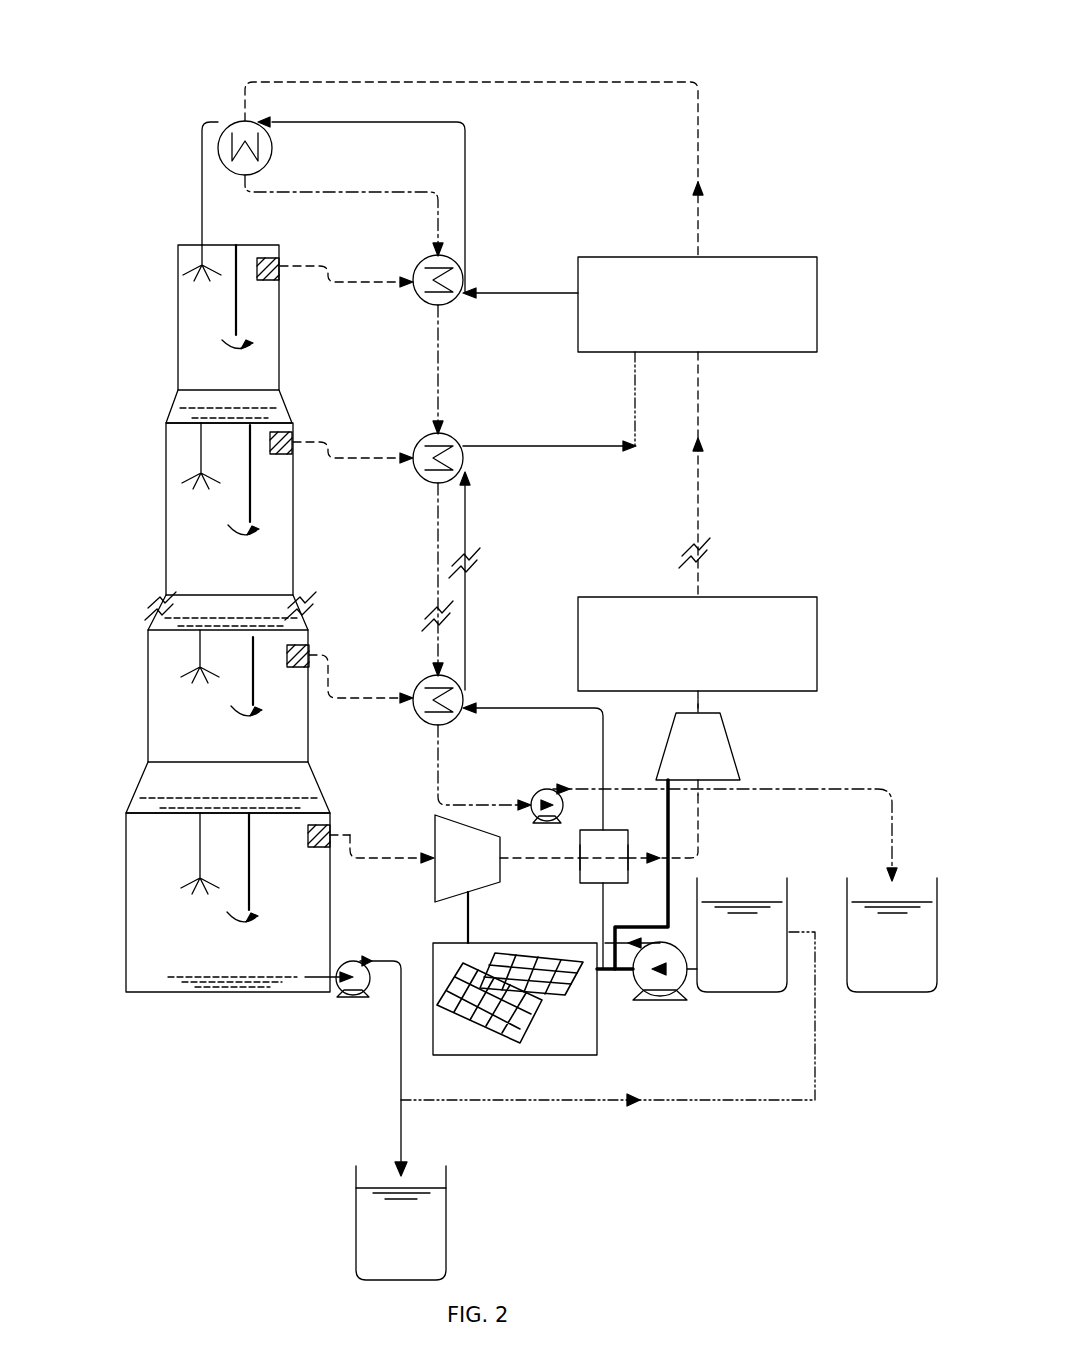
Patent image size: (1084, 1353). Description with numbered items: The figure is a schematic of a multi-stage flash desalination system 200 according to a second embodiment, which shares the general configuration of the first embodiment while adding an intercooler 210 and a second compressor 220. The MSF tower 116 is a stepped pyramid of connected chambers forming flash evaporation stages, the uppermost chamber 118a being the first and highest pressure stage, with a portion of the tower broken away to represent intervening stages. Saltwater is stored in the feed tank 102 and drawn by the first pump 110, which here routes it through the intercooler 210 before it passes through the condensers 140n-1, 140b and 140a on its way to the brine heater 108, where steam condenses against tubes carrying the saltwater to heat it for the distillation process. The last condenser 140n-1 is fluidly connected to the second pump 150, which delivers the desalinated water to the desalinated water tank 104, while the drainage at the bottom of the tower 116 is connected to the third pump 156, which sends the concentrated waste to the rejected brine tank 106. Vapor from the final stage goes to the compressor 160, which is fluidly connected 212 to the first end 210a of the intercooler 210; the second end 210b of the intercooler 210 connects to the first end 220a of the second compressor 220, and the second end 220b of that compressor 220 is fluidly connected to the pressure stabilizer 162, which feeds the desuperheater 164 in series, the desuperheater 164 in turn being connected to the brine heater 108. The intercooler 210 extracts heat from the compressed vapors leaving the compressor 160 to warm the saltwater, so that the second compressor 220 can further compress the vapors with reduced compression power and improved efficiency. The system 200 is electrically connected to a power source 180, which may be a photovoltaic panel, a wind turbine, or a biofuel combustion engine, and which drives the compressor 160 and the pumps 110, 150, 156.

The multi-stage flash desalination system 200 is at (770, 35).
The MSF tower 116 is at (170, 221).
The chamber 118a is at (177, 318).
The brine heater 108 is at (245, 120).
The condenser 140a is at (420, 262).
The condenser 140b is at (418, 443).
The condenser 140n-1 is at (422, 681).
The desuperheater 164 is at (817, 303).
The pressure stabilizer 162 is at (817, 643).
The second compressor 220 is at (733, 745).
The first end 220a is at (700, 782).
The second end 220b is at (700, 703).
The intercooler 210 is at (620, 828).
The first end 210a is at (572, 863).
The second end 210b is at (637, 863).
The fluid connection 212 is at (527, 857).
The second pump 150 is at (547, 788).
The compressor 160 is at (487, 887).
The first pump 110 is at (660, 1003).
The feed tank 102 is at (742, 993).
The desalinated water tank 104 is at (892, 993).
The third pump 156 is at (352, 1000).
The power source 180 is at (528, 1060).
The rejected brine tank 106 is at (356, 1215).